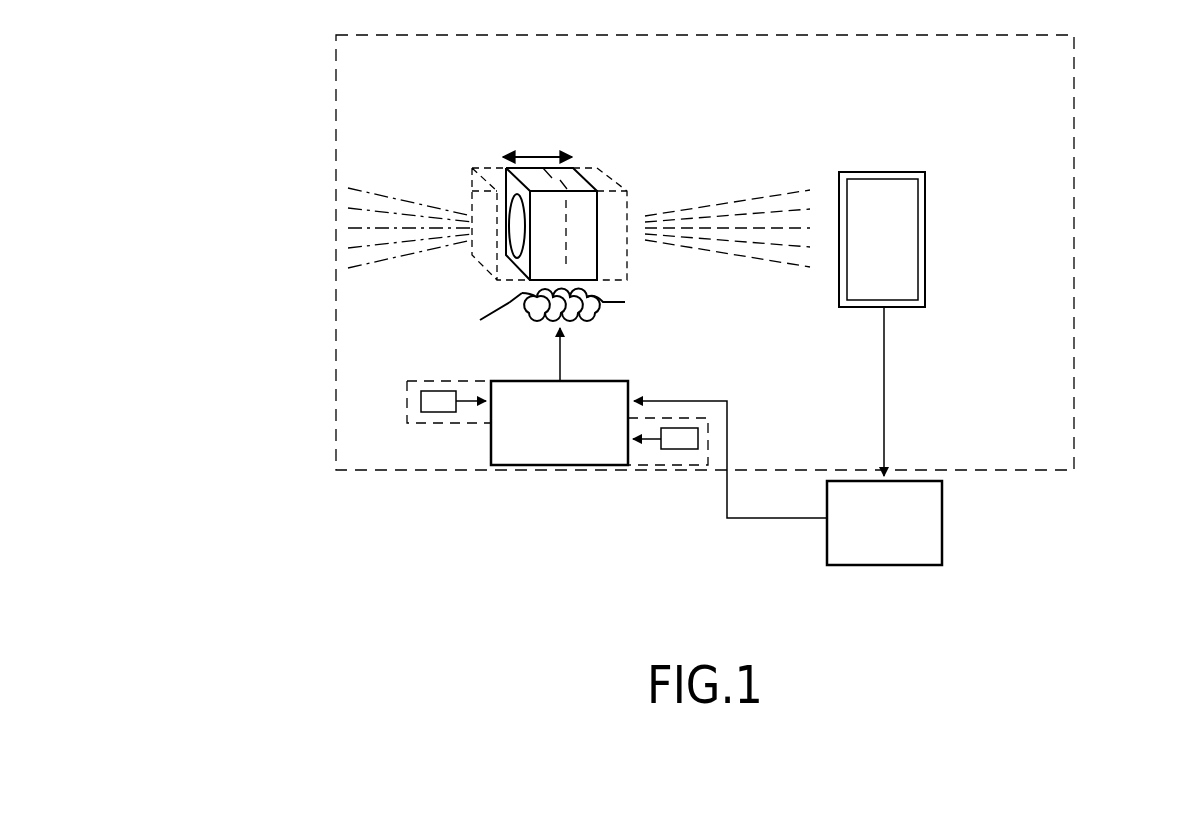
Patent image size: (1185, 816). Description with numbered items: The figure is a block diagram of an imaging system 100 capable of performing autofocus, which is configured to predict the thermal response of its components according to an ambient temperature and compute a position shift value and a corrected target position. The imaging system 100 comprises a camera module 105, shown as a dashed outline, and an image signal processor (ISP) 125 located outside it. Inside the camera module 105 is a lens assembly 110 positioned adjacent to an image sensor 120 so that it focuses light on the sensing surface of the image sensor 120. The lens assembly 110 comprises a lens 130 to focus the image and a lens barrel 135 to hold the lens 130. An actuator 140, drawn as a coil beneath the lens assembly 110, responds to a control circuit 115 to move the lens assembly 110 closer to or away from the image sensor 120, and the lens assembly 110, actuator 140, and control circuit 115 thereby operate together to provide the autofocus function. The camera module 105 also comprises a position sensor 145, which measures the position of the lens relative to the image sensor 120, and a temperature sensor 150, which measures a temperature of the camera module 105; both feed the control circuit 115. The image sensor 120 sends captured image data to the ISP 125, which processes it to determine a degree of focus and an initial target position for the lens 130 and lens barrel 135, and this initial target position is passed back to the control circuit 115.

The imaging system 100 is at (276, 229).
The camera module 105 is at (1074, 135).
The lens assembly 110 is at (466, 137).
The control circuit 115 is at (491, 440).
The image sensor 120 is at (927, 178).
The image signal processor (ISP) 125 is at (942, 515).
The lens 130 is at (517, 206).
The lens barrel 135 is at (585, 262).
The actuator 140 is at (510, 303).
The position sensor 145 is at (421, 400).
The temperature sensor 150 is at (671, 449).